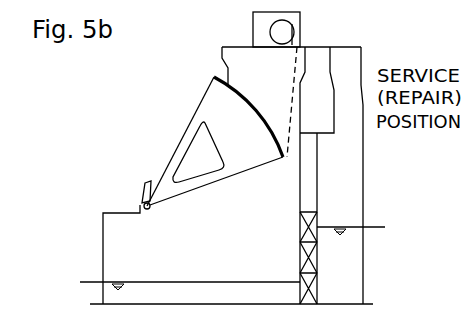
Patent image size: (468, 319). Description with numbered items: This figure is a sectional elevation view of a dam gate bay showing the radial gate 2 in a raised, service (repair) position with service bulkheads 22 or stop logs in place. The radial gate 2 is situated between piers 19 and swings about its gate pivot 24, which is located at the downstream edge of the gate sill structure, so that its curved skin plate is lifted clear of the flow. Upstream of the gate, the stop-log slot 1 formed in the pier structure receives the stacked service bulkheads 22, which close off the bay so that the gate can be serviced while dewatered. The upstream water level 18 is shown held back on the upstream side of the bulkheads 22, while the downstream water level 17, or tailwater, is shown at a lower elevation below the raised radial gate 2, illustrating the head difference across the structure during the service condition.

The stop-log slot 1 is at (318, 131).
The radial gate 2 is at (246, 145).
The downstream water level 17 is at (88, 279).
The upstream water level 18 is at (377, 224).
The pier 19 is at (270, 94).
The service bulkhead 22 is at (321, 264).
The gate pivot 24 is at (140, 199).